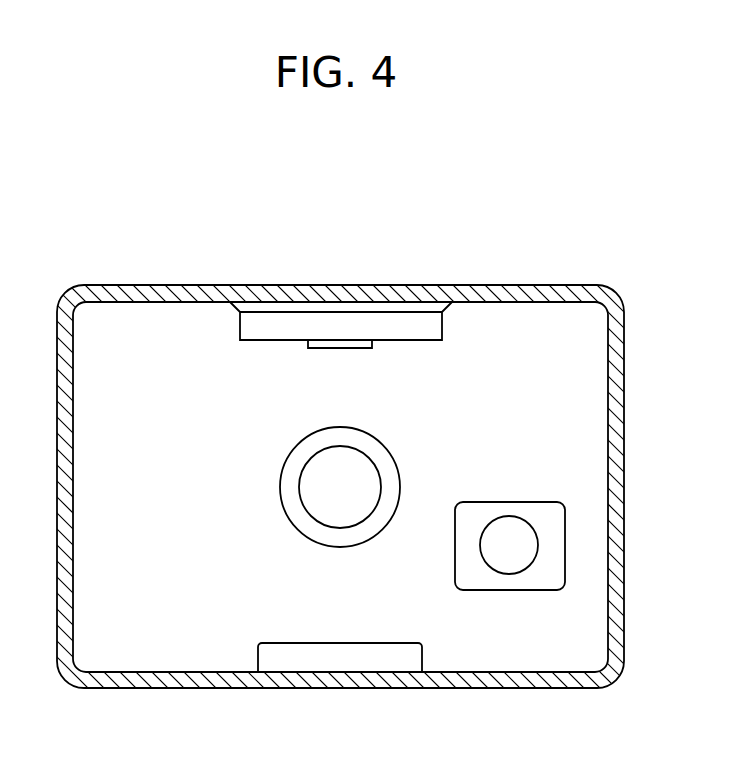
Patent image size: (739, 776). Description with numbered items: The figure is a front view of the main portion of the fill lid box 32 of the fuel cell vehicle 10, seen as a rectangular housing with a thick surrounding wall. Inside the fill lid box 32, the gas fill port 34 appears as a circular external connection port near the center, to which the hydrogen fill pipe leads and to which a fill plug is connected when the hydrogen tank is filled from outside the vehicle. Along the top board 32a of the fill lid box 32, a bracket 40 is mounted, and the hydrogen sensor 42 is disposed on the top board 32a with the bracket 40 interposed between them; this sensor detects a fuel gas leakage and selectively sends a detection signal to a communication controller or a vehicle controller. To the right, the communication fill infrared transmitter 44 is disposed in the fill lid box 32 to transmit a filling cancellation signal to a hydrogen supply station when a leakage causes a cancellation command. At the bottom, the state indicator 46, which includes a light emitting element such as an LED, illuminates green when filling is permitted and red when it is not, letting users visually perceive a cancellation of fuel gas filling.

The fuel cell vehicle 10 is at (316, 197).
The fill lid box 32 is at (504, 286).
The top board 32a is at (191, 304).
The gas fill port 34 is at (318, 536).
The bracket 40 is at (407, 305).
The hydrogen sensor 42 is at (275, 340).
The communication fill infrared transmitter 44 is at (510, 504).
The state indicator 46 is at (396, 650).